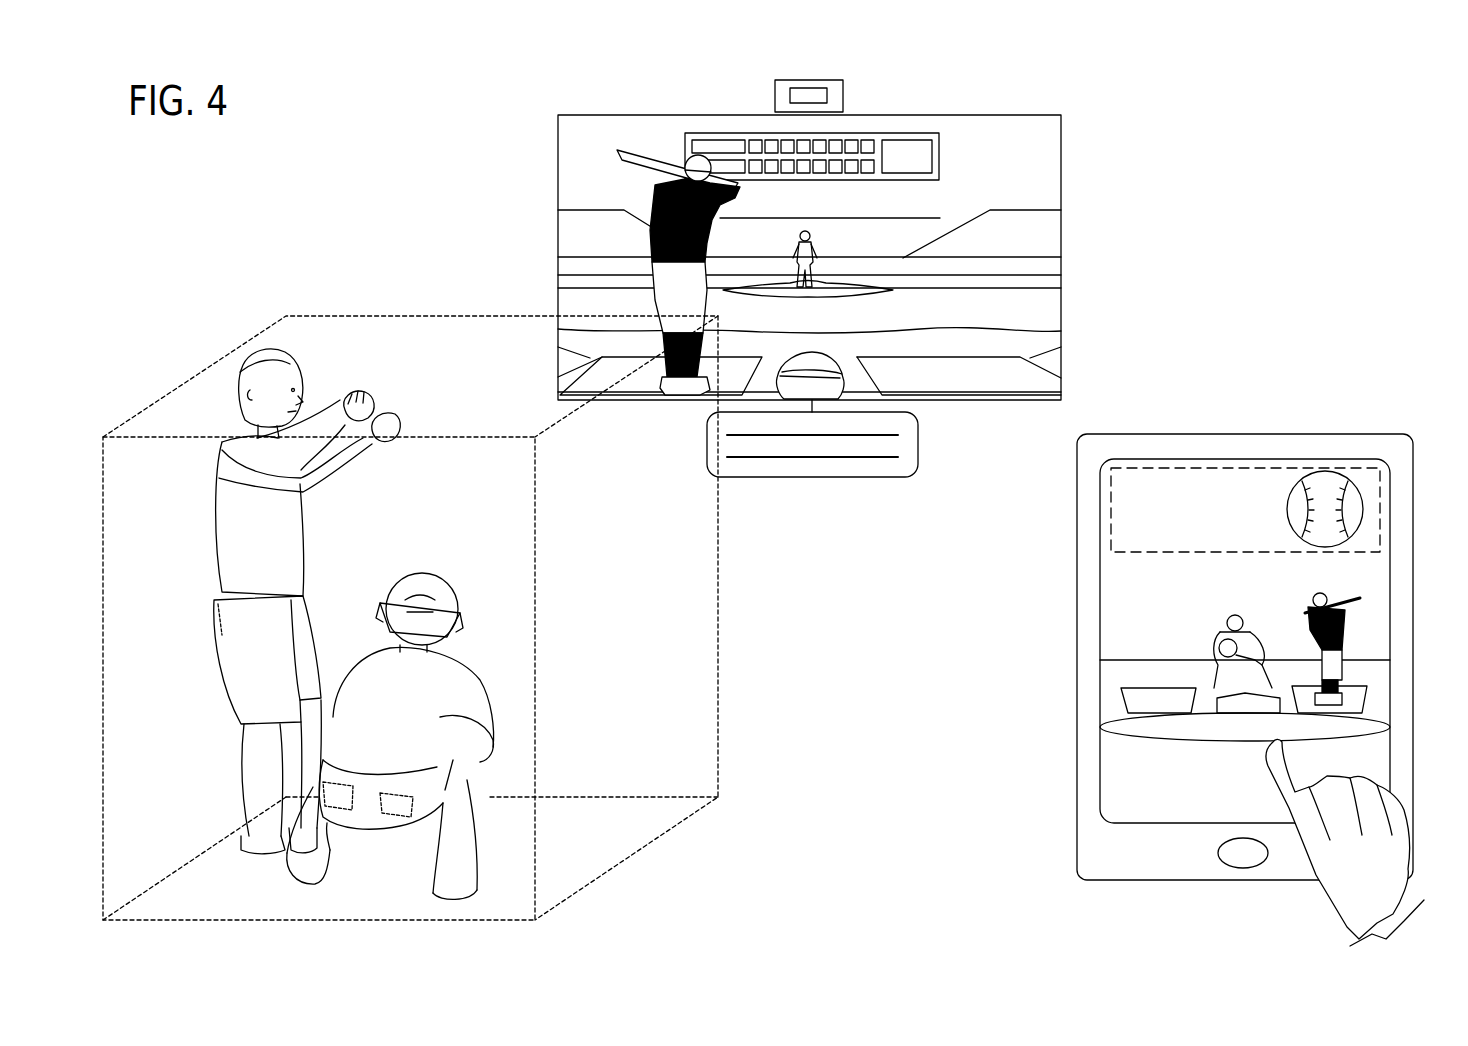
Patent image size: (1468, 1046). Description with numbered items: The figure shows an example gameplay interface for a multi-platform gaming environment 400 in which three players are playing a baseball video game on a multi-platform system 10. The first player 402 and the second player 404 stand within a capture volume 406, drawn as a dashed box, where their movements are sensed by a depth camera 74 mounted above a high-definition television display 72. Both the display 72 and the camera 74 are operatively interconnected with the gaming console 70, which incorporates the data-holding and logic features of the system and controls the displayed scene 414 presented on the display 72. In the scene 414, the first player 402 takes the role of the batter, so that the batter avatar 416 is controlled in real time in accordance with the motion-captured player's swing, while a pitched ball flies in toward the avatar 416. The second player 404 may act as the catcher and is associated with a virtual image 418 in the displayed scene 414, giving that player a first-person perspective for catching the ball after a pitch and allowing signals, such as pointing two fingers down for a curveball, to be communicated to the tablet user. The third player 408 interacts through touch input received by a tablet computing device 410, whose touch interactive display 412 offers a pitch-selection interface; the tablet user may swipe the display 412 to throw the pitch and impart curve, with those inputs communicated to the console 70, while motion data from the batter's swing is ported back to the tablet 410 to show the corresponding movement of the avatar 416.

The multi-platform gaming environment 400 is at (1335, 132).
The multi-platform system 10 is at (1093, 132).
The high-definition television display 72 is at (558, 153).
The depth camera 74 is at (775, 82).
The gaming console 70 is at (805, 478).
The capture area 406 is at (290, 268).
The first player 402 is at (281, 555).
The second player 404 is at (408, 725).
The displayed scene 414 is at (608, 146).
The batter avatar 416 is at (672, 309).
The virtual image 418 is at (823, 377).
The tablet computing device 410 is at (1213, 432).
The touch interactive display 412 is at (1150, 596).
The third player 408 is at (1371, 885).